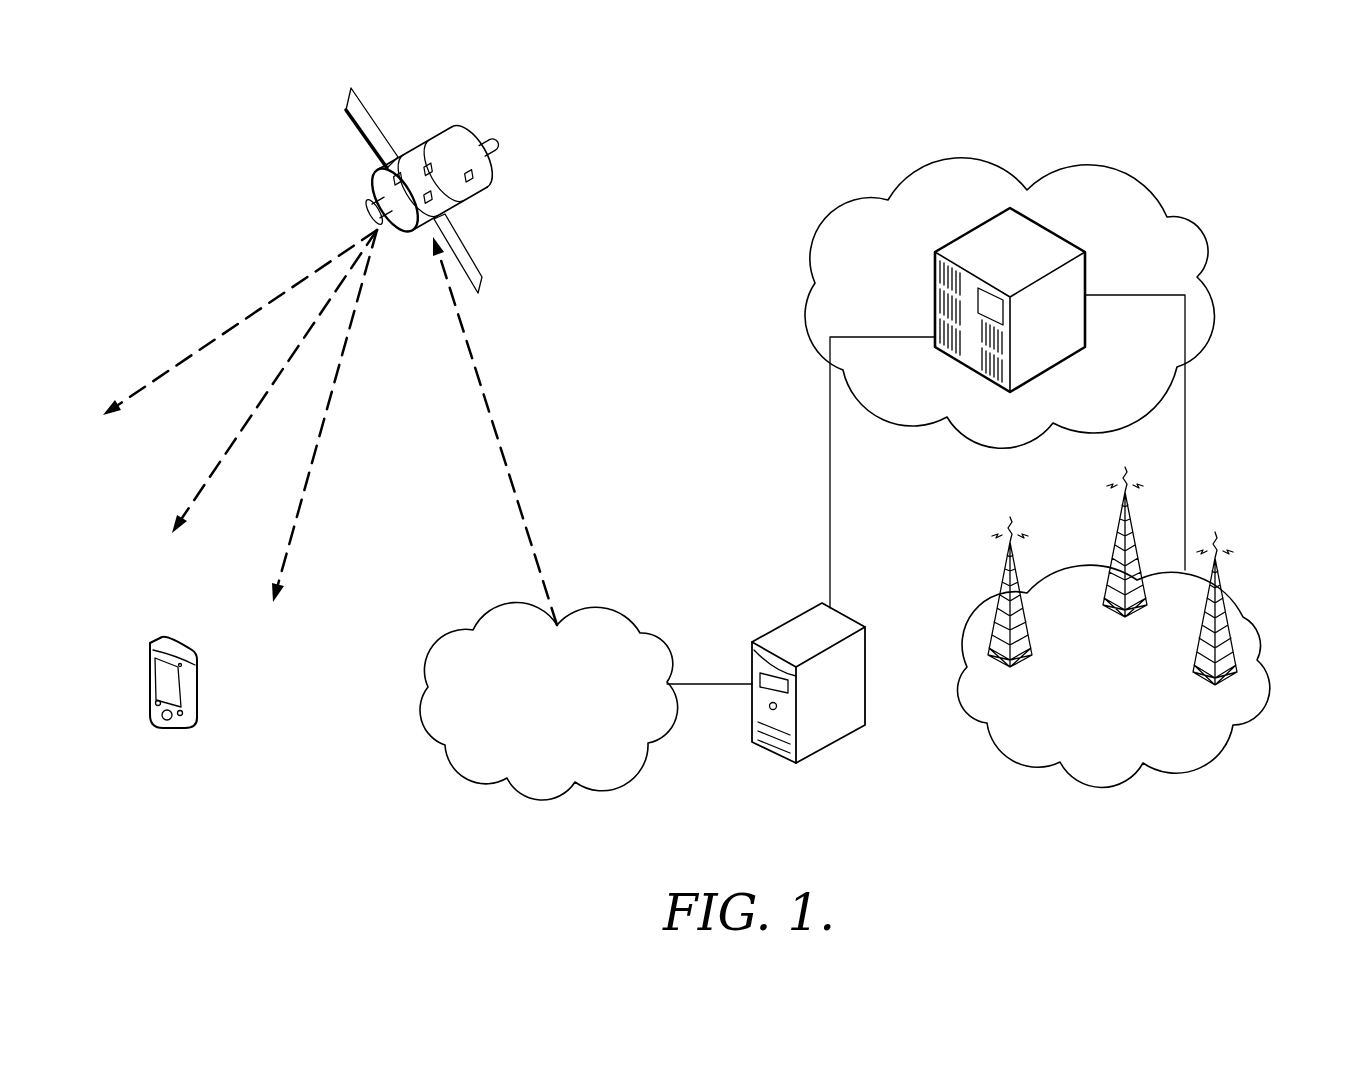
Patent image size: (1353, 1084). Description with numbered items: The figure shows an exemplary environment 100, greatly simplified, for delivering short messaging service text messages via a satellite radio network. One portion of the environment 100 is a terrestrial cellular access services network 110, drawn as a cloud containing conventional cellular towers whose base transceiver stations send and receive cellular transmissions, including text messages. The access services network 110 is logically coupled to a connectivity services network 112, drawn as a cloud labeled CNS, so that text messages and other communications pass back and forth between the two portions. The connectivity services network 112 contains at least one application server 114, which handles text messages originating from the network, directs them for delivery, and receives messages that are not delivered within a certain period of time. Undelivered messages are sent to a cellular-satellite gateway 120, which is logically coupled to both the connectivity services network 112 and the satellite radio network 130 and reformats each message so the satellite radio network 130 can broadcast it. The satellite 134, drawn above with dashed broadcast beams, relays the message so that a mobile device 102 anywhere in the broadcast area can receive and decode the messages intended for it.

The environment 100 is at (188, 113).
The satellite 134 is at (363, 103).
The mobile device 102 is at (178, 645).
The satellite radio network 130 is at (613, 612).
The cellular-satellite gateway 120 is at (845, 613).
The connectivity services network 112 is at (1120, 172).
The application server 114 is at (1050, 228).
The terrestrial cellular access services network 110 is at (1260, 627).